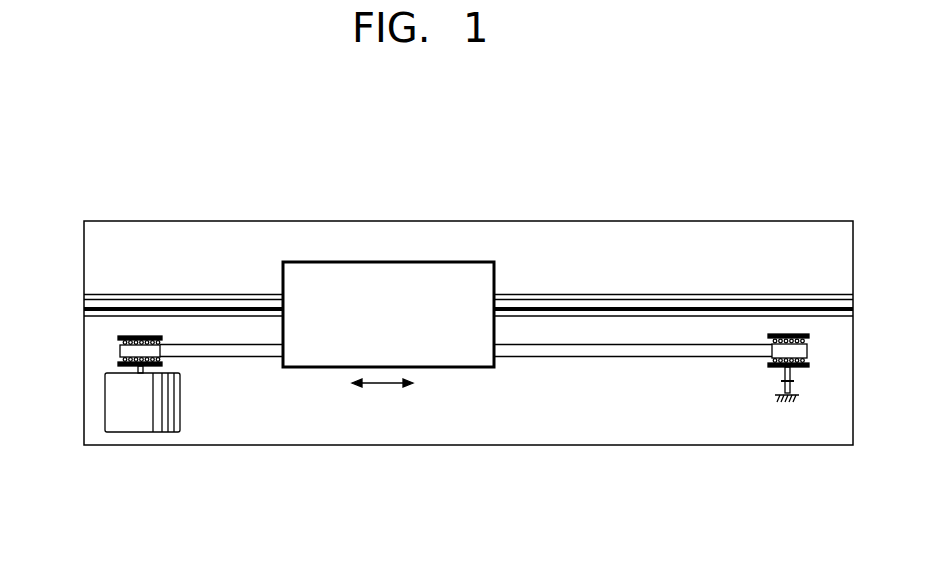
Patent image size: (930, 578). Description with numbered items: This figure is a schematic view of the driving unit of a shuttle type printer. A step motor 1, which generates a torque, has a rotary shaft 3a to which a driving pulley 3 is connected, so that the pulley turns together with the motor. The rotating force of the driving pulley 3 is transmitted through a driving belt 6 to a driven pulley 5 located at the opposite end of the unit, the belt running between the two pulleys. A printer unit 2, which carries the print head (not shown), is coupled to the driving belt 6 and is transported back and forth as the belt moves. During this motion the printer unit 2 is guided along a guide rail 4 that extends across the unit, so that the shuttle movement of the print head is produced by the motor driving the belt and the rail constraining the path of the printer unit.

The step motor 1 is at (103, 402).
The printer unit 2 is at (386, 262).
The driving pulley 3 is at (130, 335).
The rotary shaft 3a is at (130, 372).
The guide rail 4 is at (707, 300).
The driven pulley 5 is at (805, 350).
The driving belt 6 is at (625, 350).